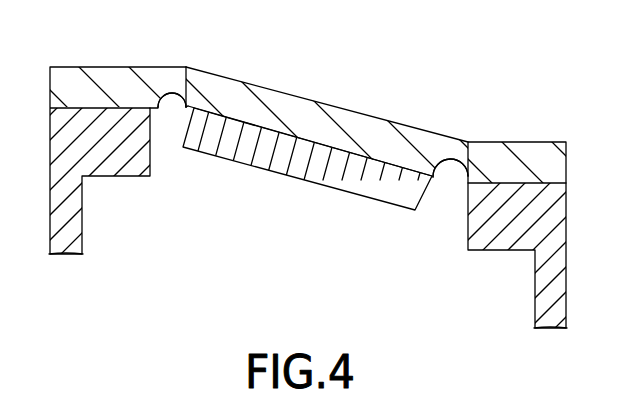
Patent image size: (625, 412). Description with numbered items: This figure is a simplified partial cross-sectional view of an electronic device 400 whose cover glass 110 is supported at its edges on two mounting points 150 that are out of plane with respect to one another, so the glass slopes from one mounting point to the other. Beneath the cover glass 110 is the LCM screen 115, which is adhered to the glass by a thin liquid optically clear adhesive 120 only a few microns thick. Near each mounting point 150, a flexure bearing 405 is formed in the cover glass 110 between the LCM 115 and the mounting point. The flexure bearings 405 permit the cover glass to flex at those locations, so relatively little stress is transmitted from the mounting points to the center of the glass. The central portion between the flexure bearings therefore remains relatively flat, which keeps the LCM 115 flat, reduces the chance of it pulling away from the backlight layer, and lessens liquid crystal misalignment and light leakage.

The electronic device 400 is at (312, 206).
The flexure bearing 405 is at (186, 67).
The cover glass 110 is at (367, 118).
The LCM screen 115 is at (270, 163).
The liquid optically clear adhesive 120 is at (431, 180).
The mounting point 150 is at (112, 155).